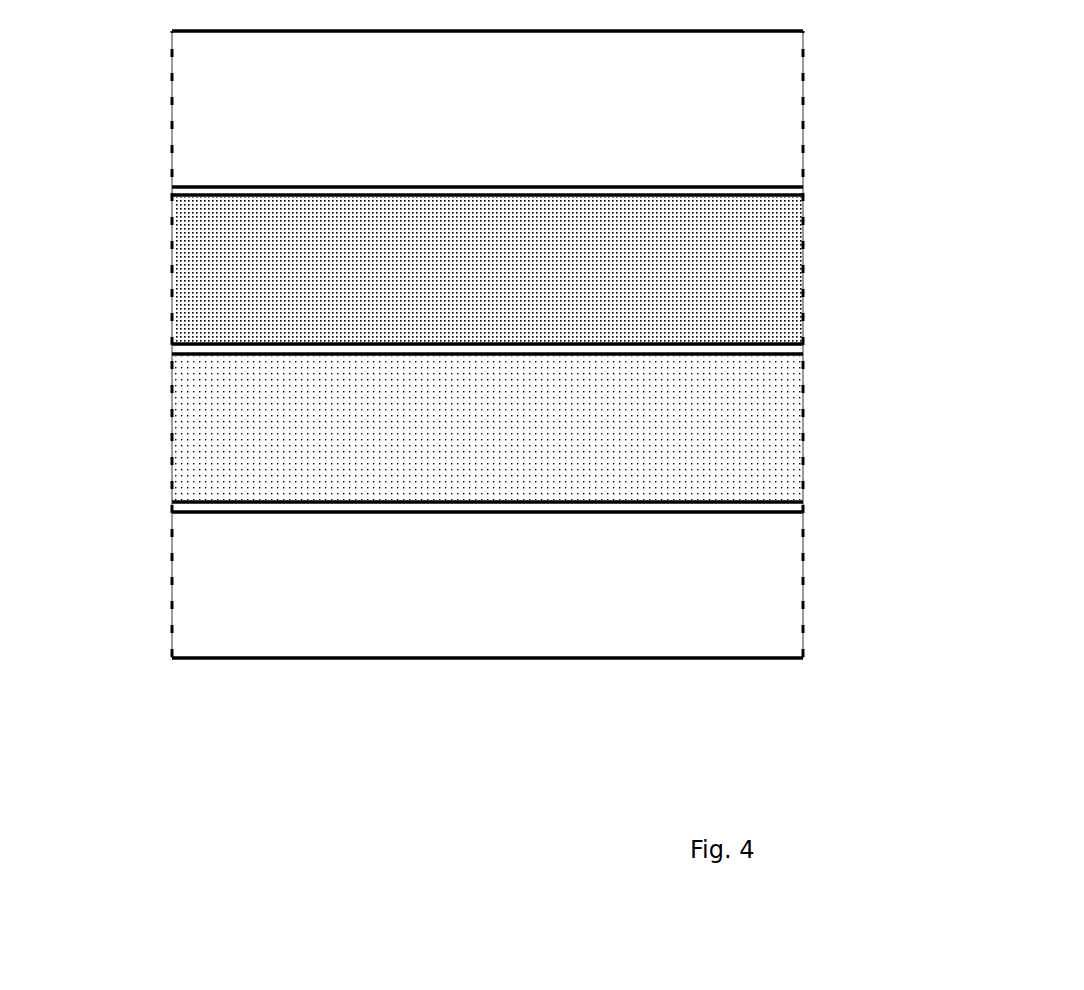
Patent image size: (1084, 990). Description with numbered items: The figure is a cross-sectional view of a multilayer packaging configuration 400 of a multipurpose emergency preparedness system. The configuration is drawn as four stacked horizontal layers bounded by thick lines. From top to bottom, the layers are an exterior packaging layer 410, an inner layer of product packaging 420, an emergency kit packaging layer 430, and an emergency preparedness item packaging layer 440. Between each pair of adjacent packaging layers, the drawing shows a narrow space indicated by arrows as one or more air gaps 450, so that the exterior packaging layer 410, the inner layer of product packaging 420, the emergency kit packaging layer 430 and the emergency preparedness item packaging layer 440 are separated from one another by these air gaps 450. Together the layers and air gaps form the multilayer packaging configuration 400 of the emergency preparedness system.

The multilayer packaging configuration 400 is at (282, 768).
The exterior packaging layer 410 is at (220, 135).
The inner layer of product packaging 420 is at (218, 297).
The emergency kit packaging layer 430 is at (218, 452).
The emergency preparedness item packaging layer 440 is at (218, 610).
The air gaps 450 is at (818, 204).